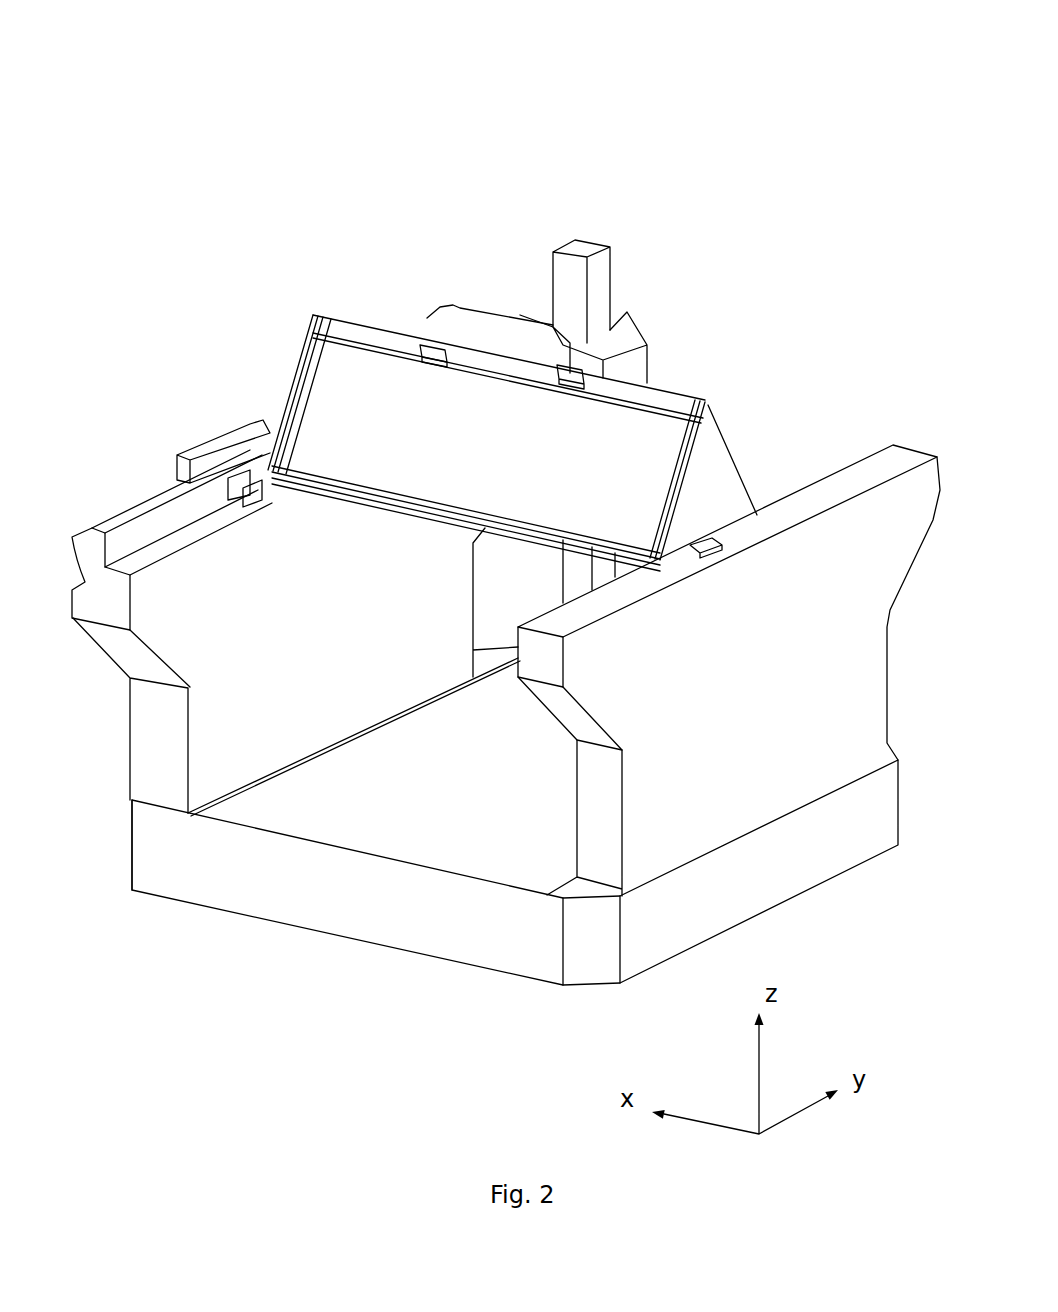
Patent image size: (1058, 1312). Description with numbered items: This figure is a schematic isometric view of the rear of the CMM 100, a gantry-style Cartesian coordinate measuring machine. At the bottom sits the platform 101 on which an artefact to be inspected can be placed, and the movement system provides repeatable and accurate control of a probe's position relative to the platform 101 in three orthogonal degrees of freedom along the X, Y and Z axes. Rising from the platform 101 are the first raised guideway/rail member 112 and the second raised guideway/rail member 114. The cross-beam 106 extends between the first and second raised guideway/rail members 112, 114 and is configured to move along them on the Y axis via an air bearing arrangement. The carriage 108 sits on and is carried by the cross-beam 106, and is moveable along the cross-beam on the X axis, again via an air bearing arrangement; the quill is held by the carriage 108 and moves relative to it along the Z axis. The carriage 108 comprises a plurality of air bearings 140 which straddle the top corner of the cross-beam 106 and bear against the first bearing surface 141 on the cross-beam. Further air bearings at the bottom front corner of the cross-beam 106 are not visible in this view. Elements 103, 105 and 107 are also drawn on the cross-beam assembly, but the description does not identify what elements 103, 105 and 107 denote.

The CMM 100 is at (848, 91).
The platform 101 is at (313, 891).
The first support arm 103 is at (285, 398).
The second support arm 105 is at (725, 470).
The cross-beam 106 is at (290, 298).
The lower cross bar 107 is at (330, 498).
The carriage 108 is at (635, 367).
The first raised guideway/rail member 112 is at (81, 516).
The second raised guideway/rail member 114 is at (866, 454).
The air bearings 140 is at (575, 377).
The first bearing surface 141 is at (340, 327).